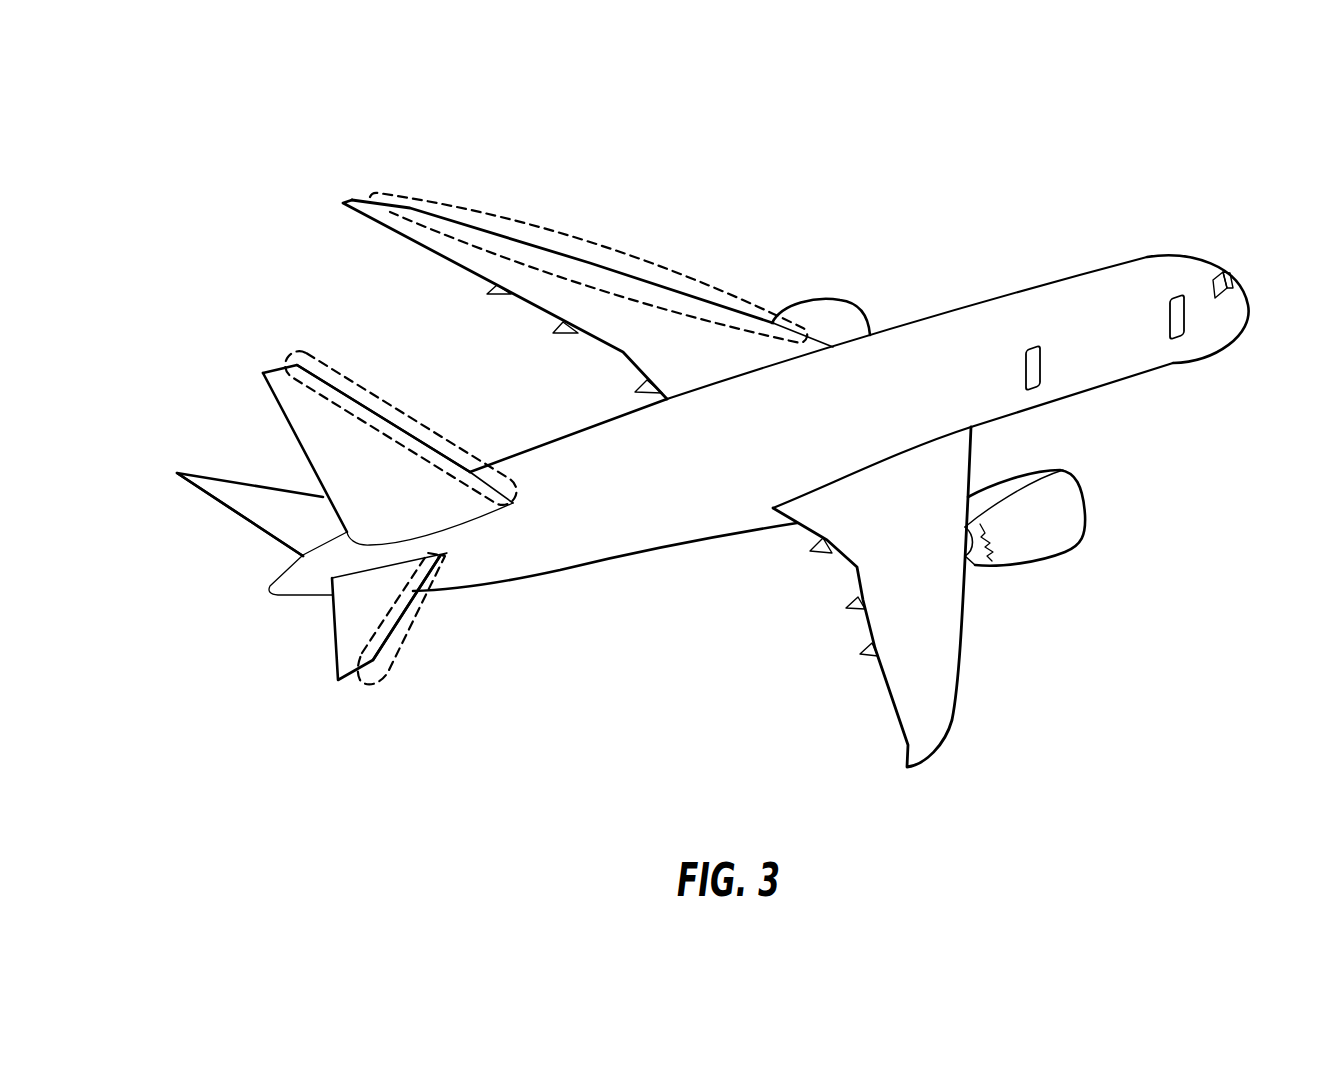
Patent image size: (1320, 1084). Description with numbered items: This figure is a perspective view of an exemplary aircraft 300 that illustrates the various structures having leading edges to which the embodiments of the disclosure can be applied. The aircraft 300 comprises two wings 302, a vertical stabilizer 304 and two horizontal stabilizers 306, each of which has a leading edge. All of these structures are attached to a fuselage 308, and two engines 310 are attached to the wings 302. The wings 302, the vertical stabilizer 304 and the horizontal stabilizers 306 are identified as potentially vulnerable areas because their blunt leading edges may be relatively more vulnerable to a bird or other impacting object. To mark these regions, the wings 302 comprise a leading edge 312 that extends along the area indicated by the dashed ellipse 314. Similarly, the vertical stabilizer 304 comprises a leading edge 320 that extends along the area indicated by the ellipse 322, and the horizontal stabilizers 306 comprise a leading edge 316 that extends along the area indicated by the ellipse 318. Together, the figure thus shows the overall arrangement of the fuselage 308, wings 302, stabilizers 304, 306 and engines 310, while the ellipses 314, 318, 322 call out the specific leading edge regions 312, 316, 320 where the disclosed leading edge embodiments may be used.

The aircraft 300 is at (1032, 130).
The wings 302 is at (705, 345).
The vertical stabilizer 304 is at (278, 378).
The horizontal stabilizers 306 is at (223, 468).
The fuselage 308 is at (1152, 266).
The engines 310 is at (845, 303).
The leading edge 312 is at (538, 248).
The ellipse 314 is at (614, 253).
The leading edge 316 is at (225, 491).
The ellipse 318 is at (424, 620).
The leading edge 320 is at (428, 450).
The ellipse 322 is at (376, 388).